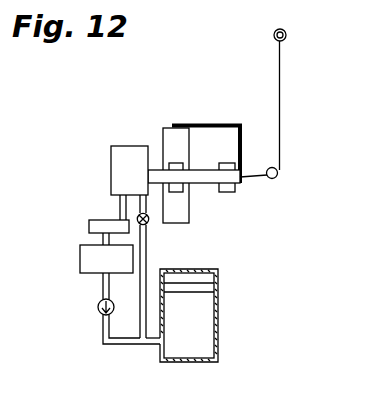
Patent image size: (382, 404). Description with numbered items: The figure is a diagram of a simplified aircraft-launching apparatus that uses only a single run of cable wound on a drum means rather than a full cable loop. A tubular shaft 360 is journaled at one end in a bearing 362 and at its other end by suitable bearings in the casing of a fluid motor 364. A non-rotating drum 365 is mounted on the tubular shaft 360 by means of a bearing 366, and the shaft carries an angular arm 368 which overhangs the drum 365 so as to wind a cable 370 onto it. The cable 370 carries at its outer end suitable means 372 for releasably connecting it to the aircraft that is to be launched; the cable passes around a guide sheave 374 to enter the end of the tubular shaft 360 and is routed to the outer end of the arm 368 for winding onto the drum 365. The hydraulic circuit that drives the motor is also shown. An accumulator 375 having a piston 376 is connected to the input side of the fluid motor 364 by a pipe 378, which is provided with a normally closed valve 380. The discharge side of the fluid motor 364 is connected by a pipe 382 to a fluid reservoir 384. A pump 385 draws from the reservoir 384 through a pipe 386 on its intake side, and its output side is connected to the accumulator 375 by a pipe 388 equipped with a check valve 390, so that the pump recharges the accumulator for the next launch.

The tubular shaft 360 is at (202, 178).
The bearing 362 is at (233, 191).
The fluid motor 364 is at (143, 134).
The non-rotating drum 365 is at (191, 218).
The bearing 366 is at (188, 161).
The angular arm 368 is at (222, 124).
The cable 370 is at (281, 95).
The means for releasably connecting the cable to an aircraft 372 is at (287, 35).
The guide sheave 374 is at (278, 172).
The accumulator 375 is at (218, 293).
The piston 376 is at (193, 288).
The pipe 378 is at (138, 318).
The normally closed valve 380 is at (146, 224).
The pipe 382 is at (120, 208).
The fluid reservoir 384 is at (92, 222).
The pump 385 is at (90, 256).
The pipe 386 is at (104, 239).
The pipe 388 is at (104, 330).
The check valve 390 is at (98, 307).